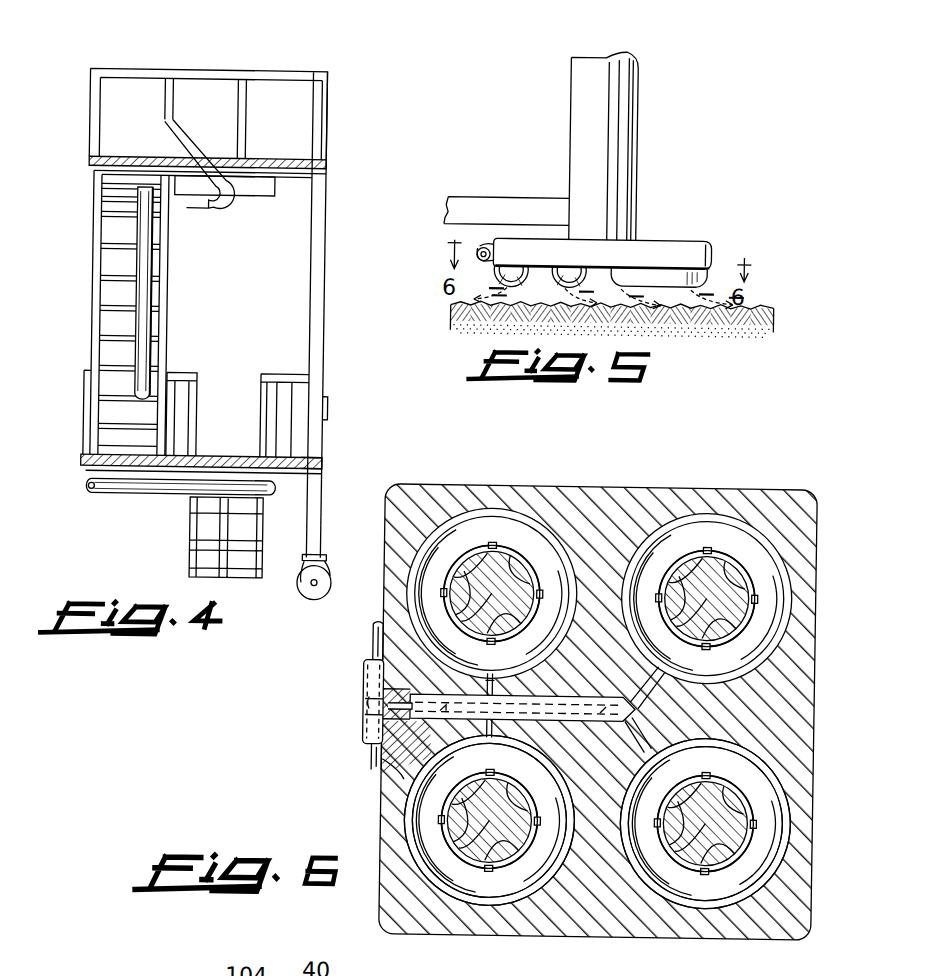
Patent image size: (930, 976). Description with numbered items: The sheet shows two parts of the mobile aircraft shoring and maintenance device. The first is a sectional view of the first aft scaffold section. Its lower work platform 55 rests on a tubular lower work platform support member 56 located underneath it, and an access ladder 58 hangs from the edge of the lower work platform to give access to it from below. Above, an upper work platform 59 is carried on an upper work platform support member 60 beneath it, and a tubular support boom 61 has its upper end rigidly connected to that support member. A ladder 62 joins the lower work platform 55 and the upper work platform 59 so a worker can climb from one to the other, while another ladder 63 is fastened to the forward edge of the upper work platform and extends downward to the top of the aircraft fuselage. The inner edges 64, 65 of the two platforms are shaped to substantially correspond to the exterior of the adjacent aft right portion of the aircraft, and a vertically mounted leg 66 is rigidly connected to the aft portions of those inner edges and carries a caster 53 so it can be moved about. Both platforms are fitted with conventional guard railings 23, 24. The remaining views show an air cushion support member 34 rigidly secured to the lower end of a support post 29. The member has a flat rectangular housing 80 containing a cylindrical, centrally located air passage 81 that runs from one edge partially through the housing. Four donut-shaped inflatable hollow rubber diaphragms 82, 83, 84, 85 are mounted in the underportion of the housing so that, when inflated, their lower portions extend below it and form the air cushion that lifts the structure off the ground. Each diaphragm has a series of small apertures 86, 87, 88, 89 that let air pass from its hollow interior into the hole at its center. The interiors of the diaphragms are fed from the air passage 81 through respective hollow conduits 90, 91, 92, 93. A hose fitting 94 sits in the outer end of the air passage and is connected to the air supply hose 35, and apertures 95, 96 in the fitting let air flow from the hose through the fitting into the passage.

In FIG. 4, the guard railing 23 is at (194, 378).
In FIG. 4, the guard railing 24 is at (147, 74).
In FIG. 5, the support post 29 is at (619, 136).
In FIG. 5, the air cushion support member 34 is at (653, 220).
In FIG. 6, the air cushion support member 34 is at (675, 488).
In FIG. 6, the air supply hose 35 is at (368, 647).
In FIG. 4, the caster 53 is at (326, 558).
In FIG. 4, the lower work platform 55 is at (112, 457).
In FIG. 4, the lower work platform support member 56 is at (135, 489).
In FIG. 4, the access ladder 58 is at (193, 527).
In FIG. 4, the upper work platform 59 is at (131, 159).
In FIG. 4, the upper work platform support member 60 is at (272, 193).
In FIG. 4, the tubular support boom 61 is at (150, 260).
In FIG. 4, the ladder 62 is at (94, 267).
In FIG. 4, the ladder 63 is at (178, 158).
In FIG. 4, the inner edge 64 is at (304, 467).
In FIG. 4, the inner edge 65 is at (321, 154).
In FIG. 4, the vertically mounted leg 66 is at (324, 263).
In FIG. 5, the housing 80 is at (695, 253).
In FIG. 6, the housing 80 is at (608, 487).
In FIG. 6, the air passage 81 is at (574, 697).
In FIG. 5, the inflatable hollow rubber diaphragm 82 is at (503, 275).
In FIG. 6, the inflatable hollow rubber diaphragm 82 is at (532, 888).
In FIG. 5, the inflatable hollow rubber diaphragm 83 is at (669, 283).
In FIG. 6, the inflatable hollow rubber diaphragm 83 is at (711, 895).
In FIG. 6, the inflatable hollow rubber diaphragm 84 is at (491, 565).
In FIG. 6, the inflatable hollow rubber diaphragm 85 is at (711, 567).
In FIG. 6, the apertures 86 is at (489, 820).
In FIG. 6, the apertures 87 is at (705, 823).
In FIG. 6, the apertures 88 is at (498, 527).
In FIG. 6, the apertures 89 is at (731, 536).
In FIG. 6, the hollow conduit 90 is at (507, 742).
In FIG. 6, the hollow conduit 91 is at (724, 724).
In FIG. 6, the hollow conduit 92 is at (487, 677).
In FIG. 6, the hollow conduit 93 is at (640, 691).
In FIG. 5, the hose fitting 94 is at (478, 250).
In FIG. 6, the hose fitting 94 is at (354, 723).
In FIG. 6, the aperture 95 is at (365, 700).
In FIG. 6, the aperture 96 is at (384, 777).